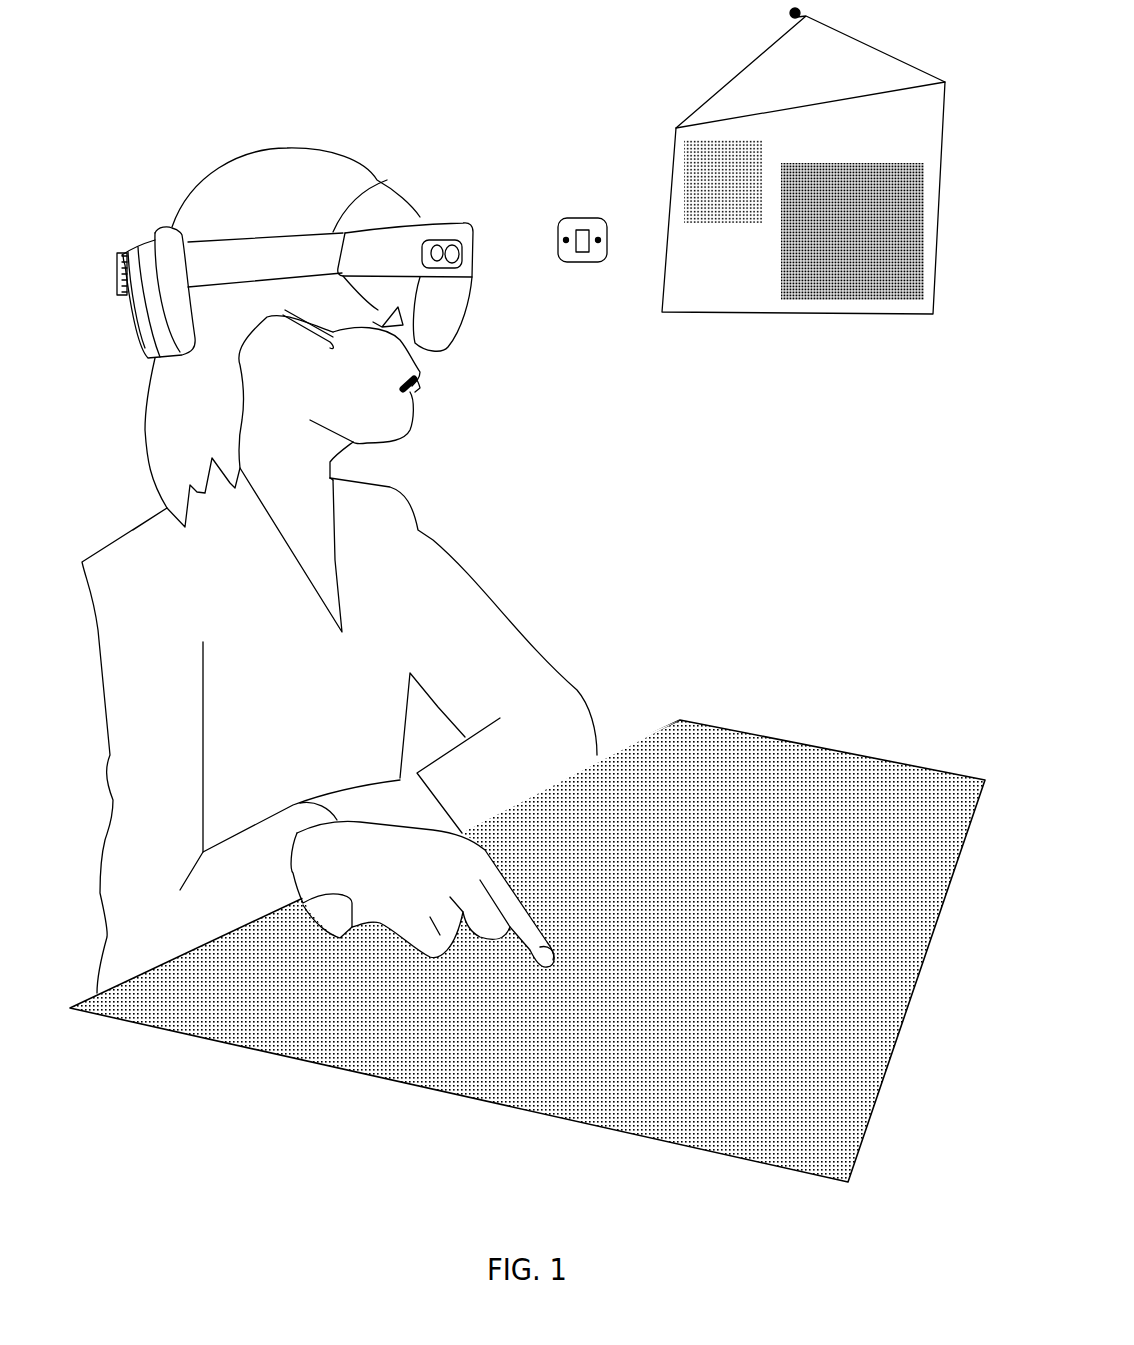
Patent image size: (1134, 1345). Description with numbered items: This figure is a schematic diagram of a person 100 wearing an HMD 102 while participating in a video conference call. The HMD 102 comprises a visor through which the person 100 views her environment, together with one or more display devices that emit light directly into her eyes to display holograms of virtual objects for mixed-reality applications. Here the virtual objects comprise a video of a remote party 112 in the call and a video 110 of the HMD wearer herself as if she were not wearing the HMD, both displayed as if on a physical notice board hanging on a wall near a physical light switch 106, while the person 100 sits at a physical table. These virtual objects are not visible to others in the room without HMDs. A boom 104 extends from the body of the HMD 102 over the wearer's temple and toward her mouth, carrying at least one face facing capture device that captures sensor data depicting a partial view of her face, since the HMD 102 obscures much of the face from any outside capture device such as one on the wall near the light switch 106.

The person 100 is at (133, 530).
The HMD 102 is at (440, 320).
The boom 104 is at (416, 385).
The light switch 106 is at (583, 224).
The video of the HMD wearer 110 is at (712, 228).
The remote party 112 is at (846, 303).